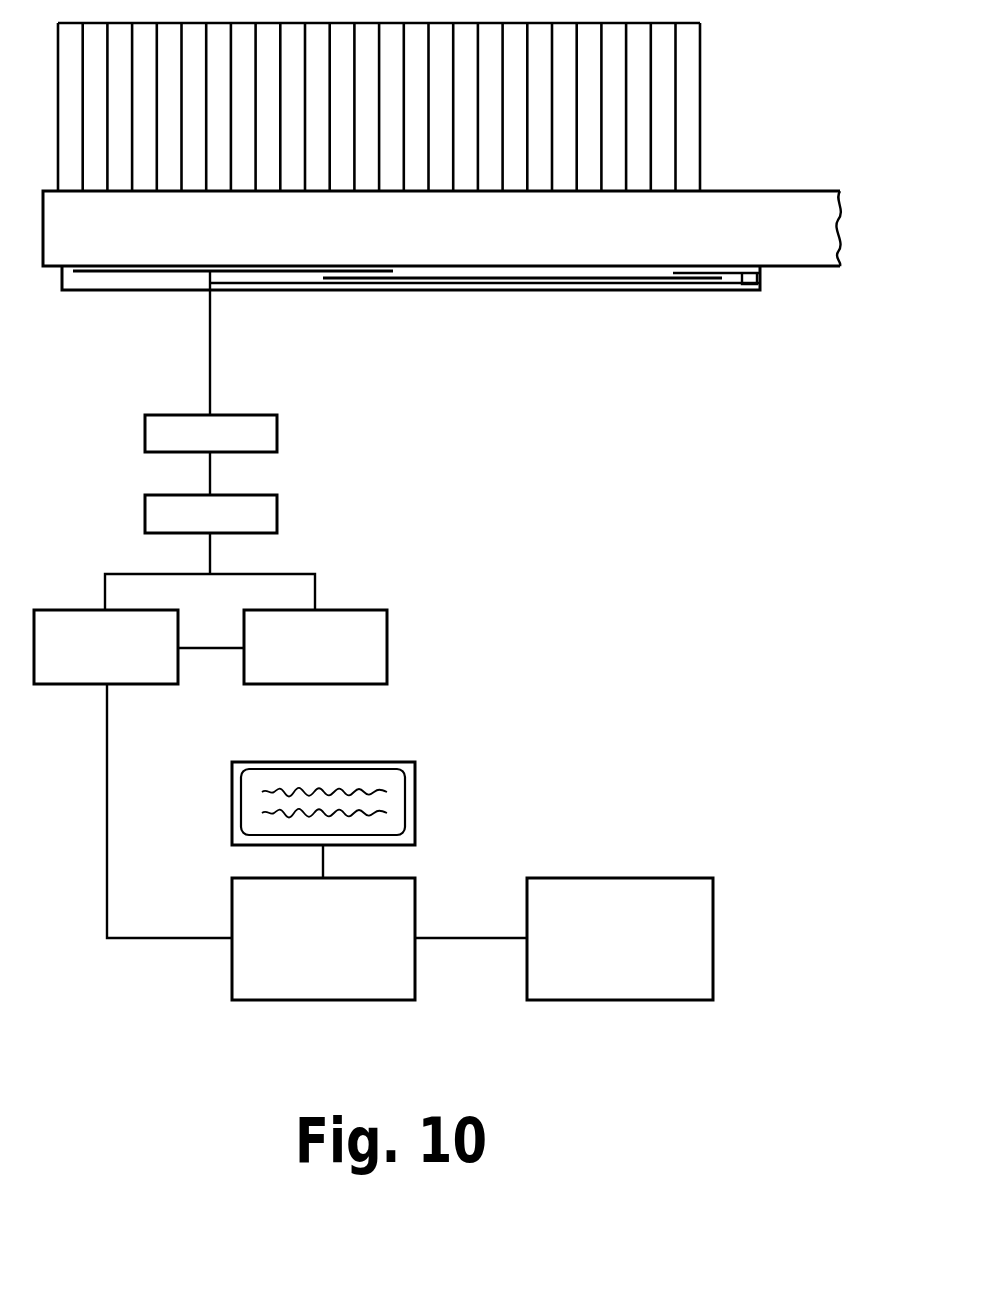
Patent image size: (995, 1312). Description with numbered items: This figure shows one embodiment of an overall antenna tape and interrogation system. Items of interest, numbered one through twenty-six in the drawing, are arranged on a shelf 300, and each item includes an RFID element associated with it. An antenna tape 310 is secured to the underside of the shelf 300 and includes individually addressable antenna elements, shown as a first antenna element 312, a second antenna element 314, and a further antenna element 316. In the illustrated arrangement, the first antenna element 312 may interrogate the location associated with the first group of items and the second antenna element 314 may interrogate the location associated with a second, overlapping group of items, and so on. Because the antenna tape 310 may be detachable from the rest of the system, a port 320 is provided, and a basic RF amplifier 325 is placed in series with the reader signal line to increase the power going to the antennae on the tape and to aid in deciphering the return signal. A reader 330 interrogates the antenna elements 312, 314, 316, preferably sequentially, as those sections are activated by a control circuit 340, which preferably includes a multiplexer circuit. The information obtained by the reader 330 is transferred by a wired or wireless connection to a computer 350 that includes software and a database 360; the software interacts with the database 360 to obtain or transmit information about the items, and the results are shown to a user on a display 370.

The shelf 300 is at (770, 204).
The antenna tape 310 is at (749, 283).
The first antenna element 312 is at (90, 274).
The second antenna element 314 is at (446, 282).
The antenna element 316 is at (762, 272).
The port 320 is at (262, 431).
The RF amplifier 325 is at (262, 513).
The reader 330 is at (57, 672).
The control circuit 340 is at (343, 676).
The computer 350 is at (323, 978).
The database 360 is at (622, 973).
The display 370 is at (410, 813).